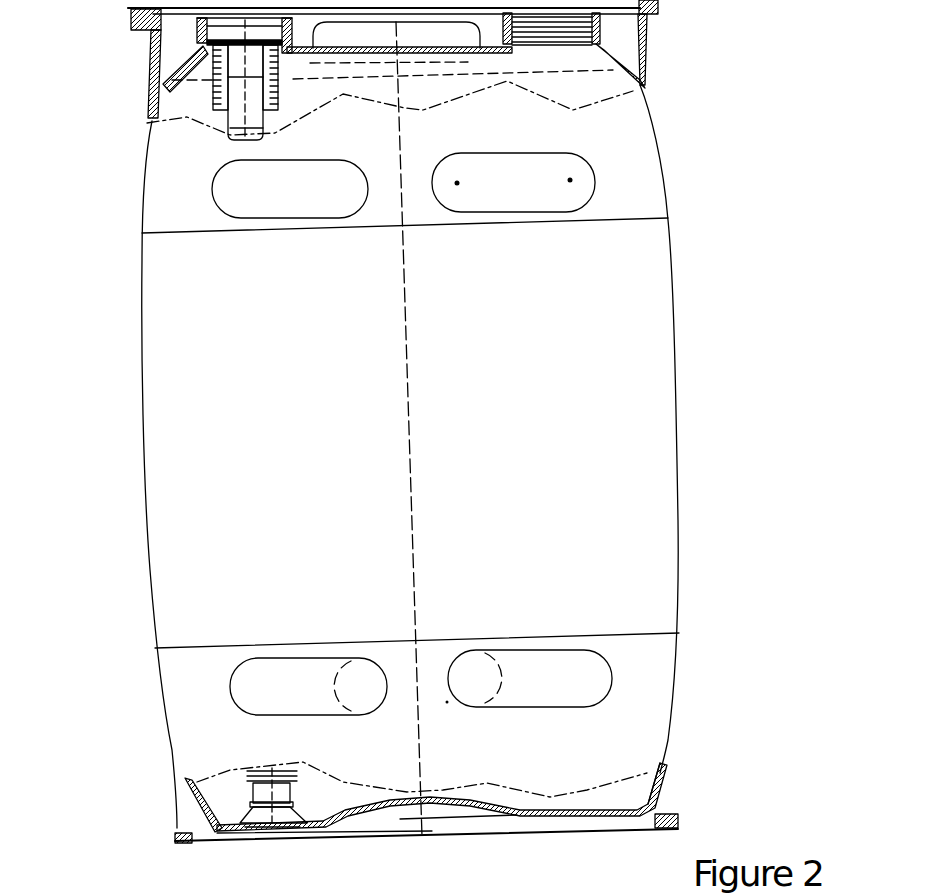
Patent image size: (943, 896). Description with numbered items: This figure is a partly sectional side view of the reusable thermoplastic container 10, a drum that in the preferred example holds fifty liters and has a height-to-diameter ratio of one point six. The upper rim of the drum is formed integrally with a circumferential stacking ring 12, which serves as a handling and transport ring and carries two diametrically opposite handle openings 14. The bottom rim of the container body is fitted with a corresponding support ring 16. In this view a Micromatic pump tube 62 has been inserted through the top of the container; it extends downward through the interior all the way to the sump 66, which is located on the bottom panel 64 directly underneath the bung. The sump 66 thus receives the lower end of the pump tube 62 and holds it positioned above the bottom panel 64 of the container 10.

The reusable thermoplastic container 10 is at (520, 431).
The stacking ring 12 is at (660, 13).
The handle openings 14 is at (355, 30).
The support ring 16 is at (678, 813).
The pump tube 62 is at (240, 107).
The bottom panel 64 is at (594, 778).
The sump 66 is at (230, 818).